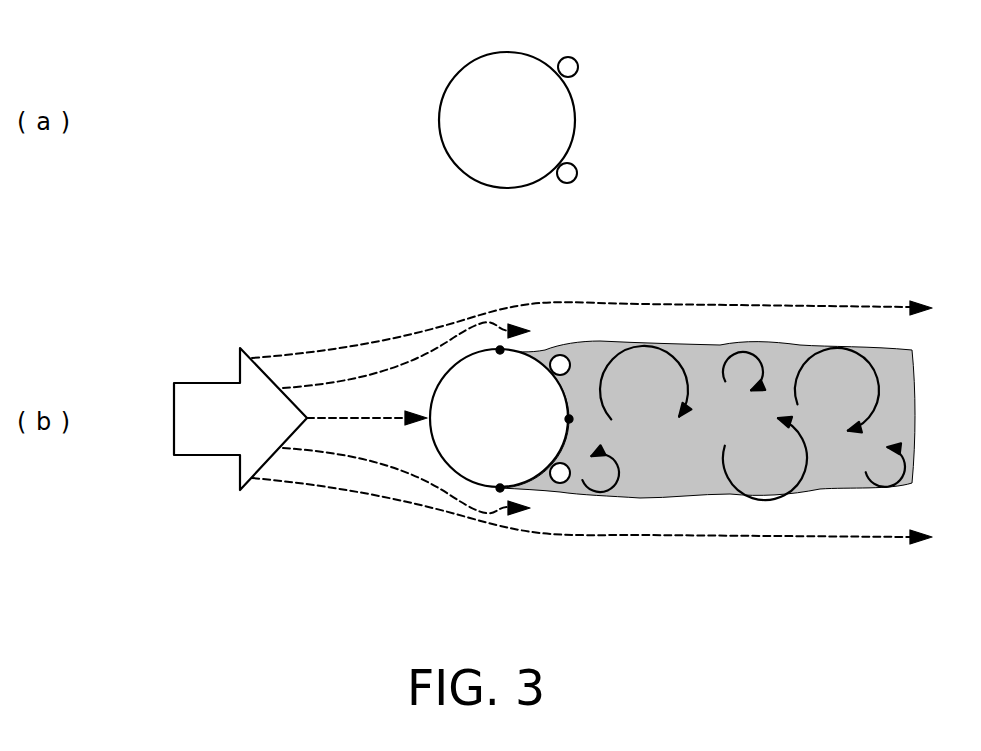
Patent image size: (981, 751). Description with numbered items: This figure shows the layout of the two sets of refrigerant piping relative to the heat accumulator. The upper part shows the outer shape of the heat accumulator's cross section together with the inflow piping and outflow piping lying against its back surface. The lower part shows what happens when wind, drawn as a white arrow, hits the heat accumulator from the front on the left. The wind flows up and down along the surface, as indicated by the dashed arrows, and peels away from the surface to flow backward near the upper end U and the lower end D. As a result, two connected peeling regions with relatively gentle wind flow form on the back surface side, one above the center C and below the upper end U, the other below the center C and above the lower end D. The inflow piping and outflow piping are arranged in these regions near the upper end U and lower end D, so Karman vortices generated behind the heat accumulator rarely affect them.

The upper end point U is at (499, 350).
The center point C is at (569, 419).
The lower end point D is at (500, 488).